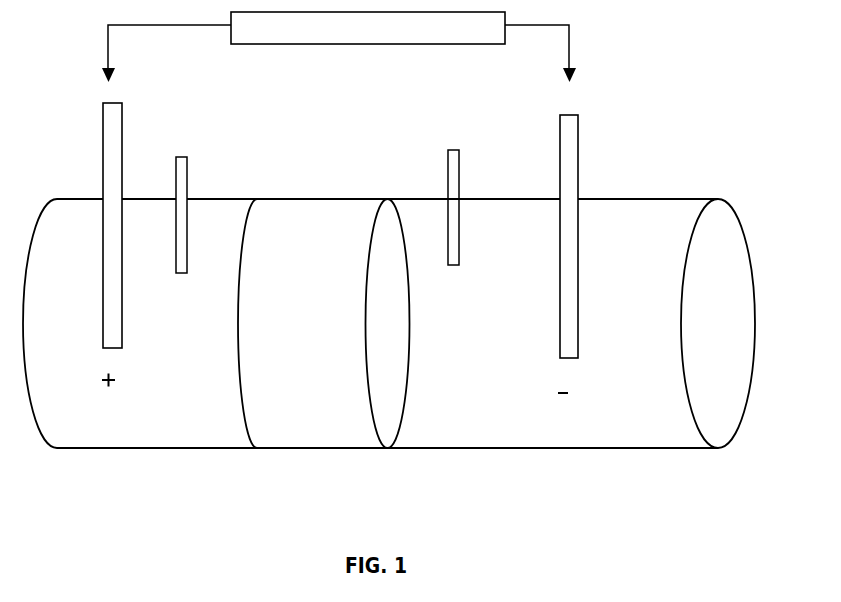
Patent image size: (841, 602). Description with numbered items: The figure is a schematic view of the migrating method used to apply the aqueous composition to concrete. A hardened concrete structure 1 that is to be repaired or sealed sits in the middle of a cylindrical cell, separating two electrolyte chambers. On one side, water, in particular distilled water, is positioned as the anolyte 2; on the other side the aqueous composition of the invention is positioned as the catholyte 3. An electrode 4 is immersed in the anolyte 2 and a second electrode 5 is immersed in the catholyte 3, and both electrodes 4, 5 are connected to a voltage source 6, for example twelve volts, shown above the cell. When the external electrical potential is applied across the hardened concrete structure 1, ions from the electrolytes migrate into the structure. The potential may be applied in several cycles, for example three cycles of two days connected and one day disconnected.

The hardened concrete structure 1 is at (323, 323).
The anolyte 2 is at (140, 302).
The catholyte 3 is at (571, 299).
The electrode 4 is at (83, 245).
The electrode 5 is at (596, 254).
The voltage source 6 is at (339, 47).